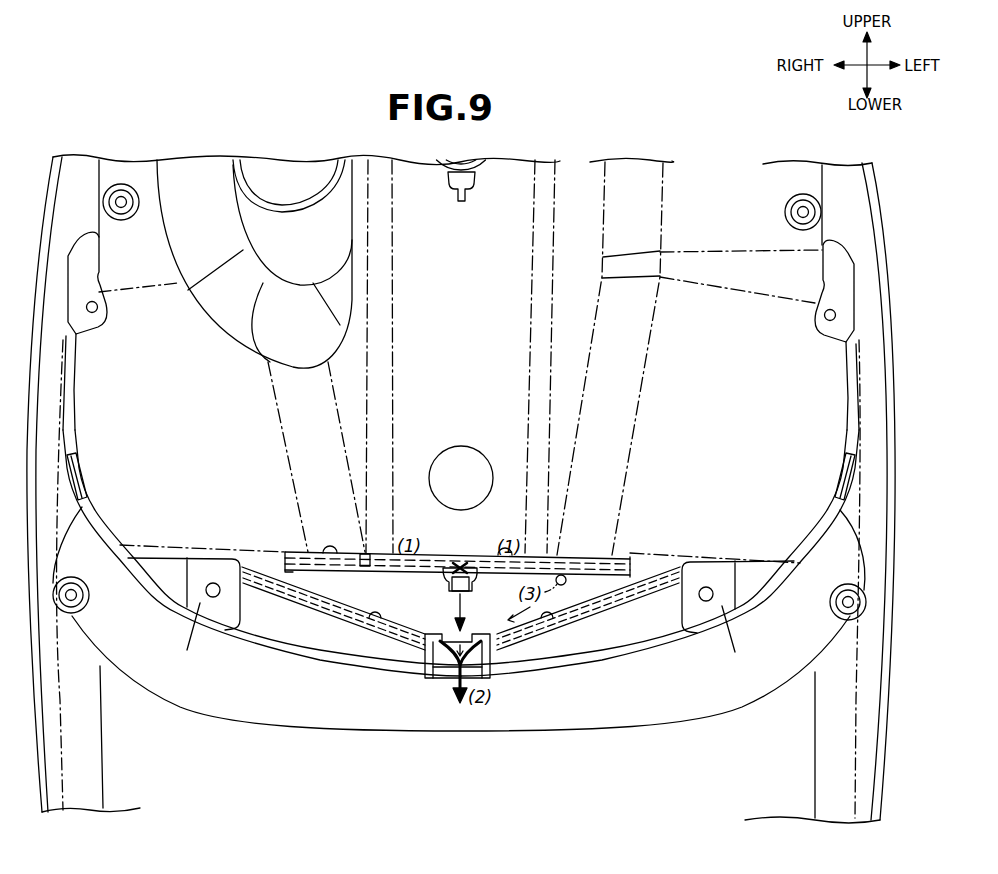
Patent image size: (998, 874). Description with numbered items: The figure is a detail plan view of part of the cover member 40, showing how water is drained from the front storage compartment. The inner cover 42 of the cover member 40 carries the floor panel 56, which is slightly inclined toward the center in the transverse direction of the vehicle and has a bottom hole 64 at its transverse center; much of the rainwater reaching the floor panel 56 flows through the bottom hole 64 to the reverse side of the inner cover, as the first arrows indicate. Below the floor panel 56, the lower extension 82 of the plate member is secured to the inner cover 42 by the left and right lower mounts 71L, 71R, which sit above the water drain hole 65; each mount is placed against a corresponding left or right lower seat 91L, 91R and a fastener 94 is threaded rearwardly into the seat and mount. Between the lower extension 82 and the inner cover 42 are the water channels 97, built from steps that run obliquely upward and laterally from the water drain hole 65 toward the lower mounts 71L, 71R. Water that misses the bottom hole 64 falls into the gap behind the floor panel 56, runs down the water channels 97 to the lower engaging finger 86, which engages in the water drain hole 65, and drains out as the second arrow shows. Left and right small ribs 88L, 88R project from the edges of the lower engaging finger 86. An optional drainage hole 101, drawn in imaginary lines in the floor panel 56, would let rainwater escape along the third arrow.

The cover member 40 is at (897, 441).
The inner cover 42 is at (461, 488).
The floor panel 56 is at (318, 563).
The bottom hole 64 is at (445, 588).
The water drain hole 65 is at (440, 652).
The left lower mount 71L is at (238, 615).
The right lower mount 71R is at (676, 626).
The lower extension 82 is at (580, 642).
The lower engaging finger 86 is at (453, 678).
The left small rib 88L is at (432, 666).
The right small rib 88R is at (491, 670).
The left lower seat 91L is at (187, 650).
The right lower seat 91R is at (735, 652).
The fastener 94 is at (213, 598).
The water channels 97 is at (375, 622).
The drainage hole 101 is at (566, 590).